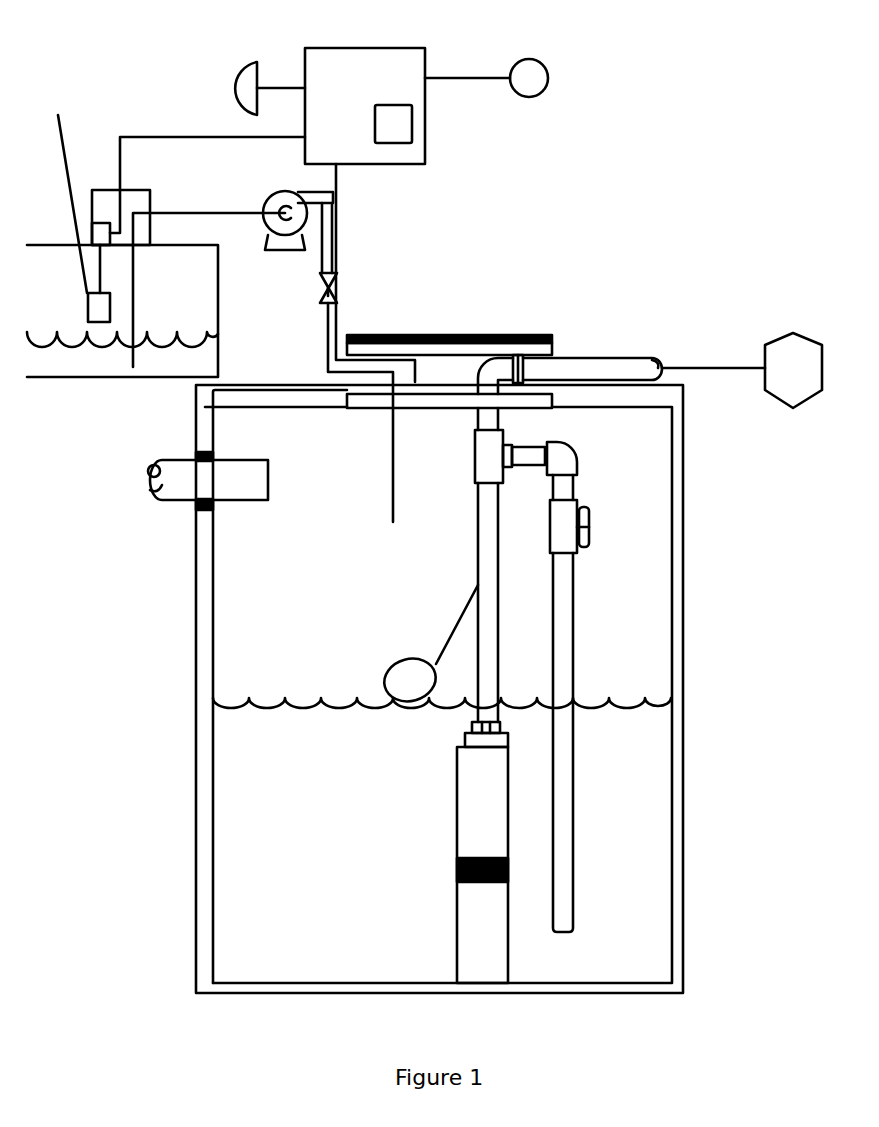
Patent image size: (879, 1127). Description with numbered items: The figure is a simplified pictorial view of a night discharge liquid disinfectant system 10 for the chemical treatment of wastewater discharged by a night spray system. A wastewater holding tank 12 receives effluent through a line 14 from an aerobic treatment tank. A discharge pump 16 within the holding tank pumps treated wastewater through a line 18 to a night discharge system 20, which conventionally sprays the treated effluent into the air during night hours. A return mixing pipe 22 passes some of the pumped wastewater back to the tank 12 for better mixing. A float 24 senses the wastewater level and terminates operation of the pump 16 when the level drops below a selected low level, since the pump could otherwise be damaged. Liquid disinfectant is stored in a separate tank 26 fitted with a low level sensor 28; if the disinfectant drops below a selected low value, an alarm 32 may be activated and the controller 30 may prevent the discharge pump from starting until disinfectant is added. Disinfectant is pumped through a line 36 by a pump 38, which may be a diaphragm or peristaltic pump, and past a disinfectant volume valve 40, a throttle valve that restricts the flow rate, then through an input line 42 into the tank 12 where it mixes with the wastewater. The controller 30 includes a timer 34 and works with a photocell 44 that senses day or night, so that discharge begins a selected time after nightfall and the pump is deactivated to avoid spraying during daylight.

The night discharge liquid disinfectant system 10 is at (612, 263).
The wastewater holding tank 12 is at (672, 550).
The line 14 is at (165, 485).
The discharge pump 16 is at (457, 828).
The line 18 is at (658, 360).
The night discharge system 20 is at (742, 370).
The return mixing pipe 22 is at (568, 652).
The float 24 is at (390, 672).
The tank 26 is at (218, 293).
The low level sensor 28 is at (162, 214).
The controller 30 is at (370, 46).
The alarm 32 is at (240, 62).
The timer 34 is at (393, 121).
The line 36 is at (203, 212).
The pump 38 is at (305, 226).
The disinfectant volume valve 40 is at (337, 295).
The input line 42 is at (393, 467).
The photocell 44 is at (504, 78).